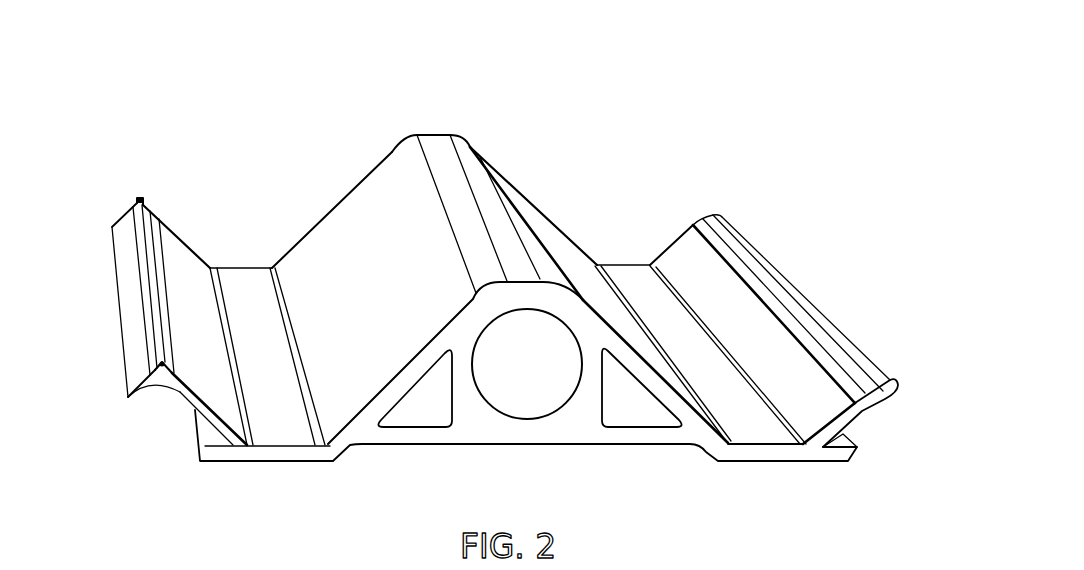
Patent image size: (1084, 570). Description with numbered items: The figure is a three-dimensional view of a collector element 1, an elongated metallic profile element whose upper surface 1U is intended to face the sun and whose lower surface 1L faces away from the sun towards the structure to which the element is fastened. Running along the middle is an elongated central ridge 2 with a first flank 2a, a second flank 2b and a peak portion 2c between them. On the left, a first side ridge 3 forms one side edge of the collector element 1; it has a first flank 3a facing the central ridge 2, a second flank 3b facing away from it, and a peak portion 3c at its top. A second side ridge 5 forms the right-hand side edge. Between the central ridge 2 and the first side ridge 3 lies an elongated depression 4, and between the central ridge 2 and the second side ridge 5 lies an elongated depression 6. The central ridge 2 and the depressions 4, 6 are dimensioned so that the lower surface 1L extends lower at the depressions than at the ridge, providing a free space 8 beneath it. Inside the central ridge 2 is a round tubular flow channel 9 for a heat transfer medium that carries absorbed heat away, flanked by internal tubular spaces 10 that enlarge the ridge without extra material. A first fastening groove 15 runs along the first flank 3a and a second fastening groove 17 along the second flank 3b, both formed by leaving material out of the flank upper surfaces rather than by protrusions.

The collector element 1 is at (647, 64).
The upper surface 1U is at (492, 157).
The lower surface 1L is at (683, 448).
The central ridge 2 is at (543, 297).
The first flank 2a is at (569, 257).
The second flank 2b is at (360, 198).
The peak portion 2c is at (426, 122).
The first side ridge 3 is at (187, 212).
The first flank 3a is at (188, 372).
The second flank 3b is at (133, 318).
The peak portion 3c is at (162, 368).
The depression 4 is at (286, 415).
The second side ridge 5 is at (703, 195).
The depression 6 is at (760, 427).
The free space 8 is at (466, 457).
The flow channel 9 is at (536, 375).
The internal spaces 10 is at (418, 408).
The first fastening groove 15 is at (152, 216).
The second fastening groove 17 is at (136, 203).